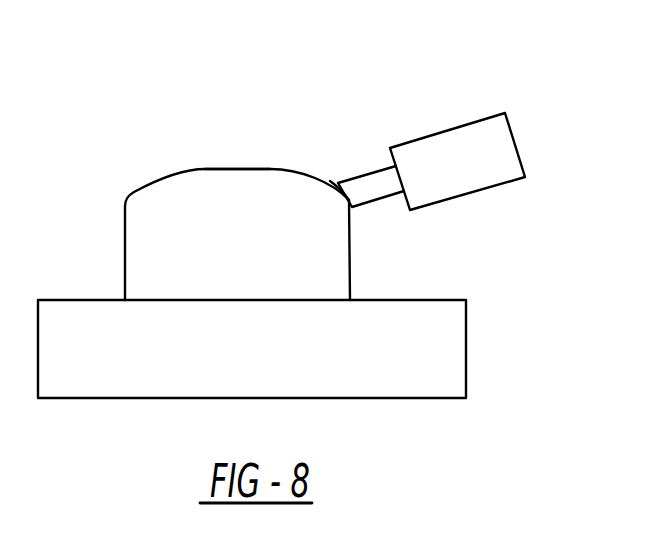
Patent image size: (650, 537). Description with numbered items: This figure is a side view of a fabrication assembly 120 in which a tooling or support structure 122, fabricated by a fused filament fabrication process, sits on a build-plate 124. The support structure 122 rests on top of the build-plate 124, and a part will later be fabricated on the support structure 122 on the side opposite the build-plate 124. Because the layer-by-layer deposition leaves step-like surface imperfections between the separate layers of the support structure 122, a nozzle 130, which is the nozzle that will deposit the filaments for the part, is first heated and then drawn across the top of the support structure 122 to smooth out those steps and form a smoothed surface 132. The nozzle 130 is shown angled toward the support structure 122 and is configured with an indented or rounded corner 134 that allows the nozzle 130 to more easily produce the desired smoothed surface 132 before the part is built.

The fabrication assembly 120 is at (97, 152).
The support structure 122 is at (138, 252).
The build-plate 124 is at (450, 362).
The nozzle 130 is at (455, 147).
The smoothed surface 132 is at (238, 170).
The rounded corner 134 is at (348, 200).